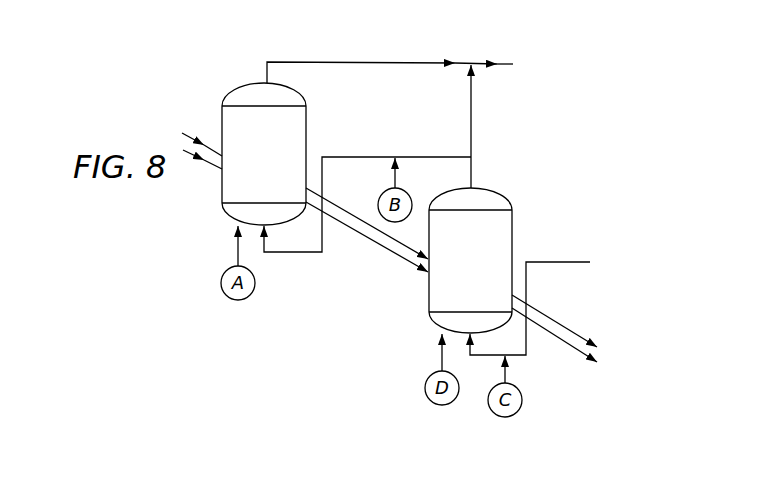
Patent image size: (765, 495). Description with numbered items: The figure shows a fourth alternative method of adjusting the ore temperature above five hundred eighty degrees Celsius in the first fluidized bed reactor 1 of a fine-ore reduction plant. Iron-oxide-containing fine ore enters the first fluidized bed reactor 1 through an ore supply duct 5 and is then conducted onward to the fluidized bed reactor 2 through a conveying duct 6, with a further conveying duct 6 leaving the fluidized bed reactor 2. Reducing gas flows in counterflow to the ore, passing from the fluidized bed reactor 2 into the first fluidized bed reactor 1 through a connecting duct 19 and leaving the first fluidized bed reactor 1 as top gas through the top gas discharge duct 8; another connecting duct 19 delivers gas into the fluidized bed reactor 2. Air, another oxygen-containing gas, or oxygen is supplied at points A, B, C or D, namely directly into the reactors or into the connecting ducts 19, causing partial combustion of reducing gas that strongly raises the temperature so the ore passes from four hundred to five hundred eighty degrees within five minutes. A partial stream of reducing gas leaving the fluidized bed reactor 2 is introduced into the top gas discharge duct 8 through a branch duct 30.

The first fluidized bed reactor 1 is at (270, 149).
The fluidized bed reactor 2 is at (480, 254).
The ore supply duct 5 is at (195, 151).
The conveying ducts 6 is at (384, 244).
The top gas discharge duct 8 is at (377, 62).
The connecting ducts 19 is at (362, 156).
The branch duct 30 is at (471, 135).